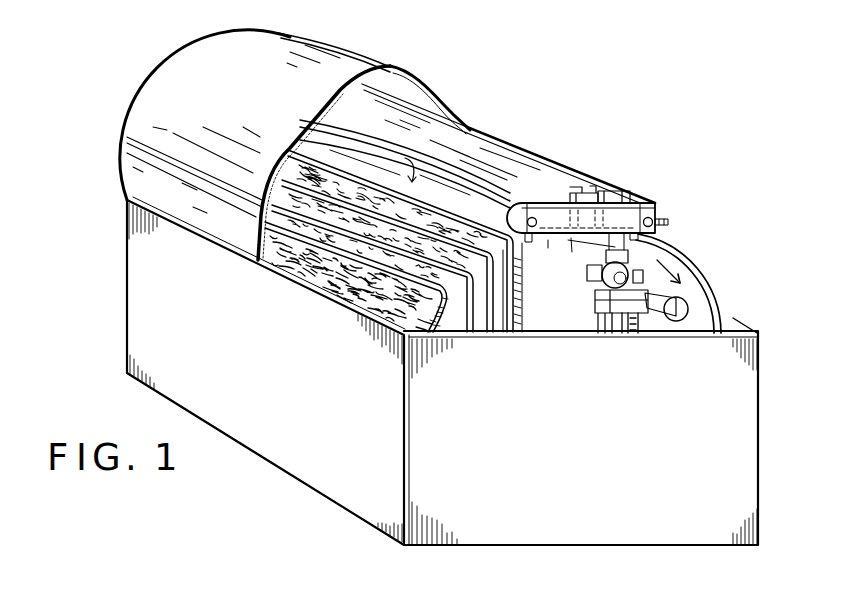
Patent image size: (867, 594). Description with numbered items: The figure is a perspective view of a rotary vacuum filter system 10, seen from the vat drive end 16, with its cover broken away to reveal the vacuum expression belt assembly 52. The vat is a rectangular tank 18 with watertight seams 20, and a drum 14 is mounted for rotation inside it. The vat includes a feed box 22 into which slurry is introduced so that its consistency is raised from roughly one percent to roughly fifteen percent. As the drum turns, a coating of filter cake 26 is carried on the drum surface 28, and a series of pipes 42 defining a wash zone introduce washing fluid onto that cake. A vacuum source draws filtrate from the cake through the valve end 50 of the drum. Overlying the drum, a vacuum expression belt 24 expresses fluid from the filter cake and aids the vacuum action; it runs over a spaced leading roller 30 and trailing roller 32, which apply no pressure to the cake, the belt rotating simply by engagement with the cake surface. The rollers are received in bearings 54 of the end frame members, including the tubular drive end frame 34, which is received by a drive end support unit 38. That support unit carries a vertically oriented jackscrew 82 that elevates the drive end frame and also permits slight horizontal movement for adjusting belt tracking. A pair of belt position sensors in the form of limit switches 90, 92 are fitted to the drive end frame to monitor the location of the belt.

The rotary vacuum filter system 10 is at (733, 280).
The drum 14 is at (693, 317).
The vat drive end 16 is at (713, 284).
The rectangular tank 18 is at (580, 441).
The watertight seams 20 is at (762, 558).
The feed box 22 is at (266, 228).
The vacuum expression belt 24 is at (508, 167).
The filter cake 26 is at (386, 287).
The drum surface 28 is at (447, 305).
The leading roller 30 is at (318, 118).
The trailing roller 32 is at (470, 137).
The drive end frame 34 is at (650, 215).
The drive end support unit 38 is at (617, 313).
The pipes 42 is at (503, 327).
The valve end 50 is at (395, 50).
The vacuum expression belt assembly 52 is at (618, 174).
The bearings 54 is at (666, 221).
The jackscrew 82 is at (602, 278).
The limit switch 90 is at (606, 187).
The limit switch 92 is at (582, 189).